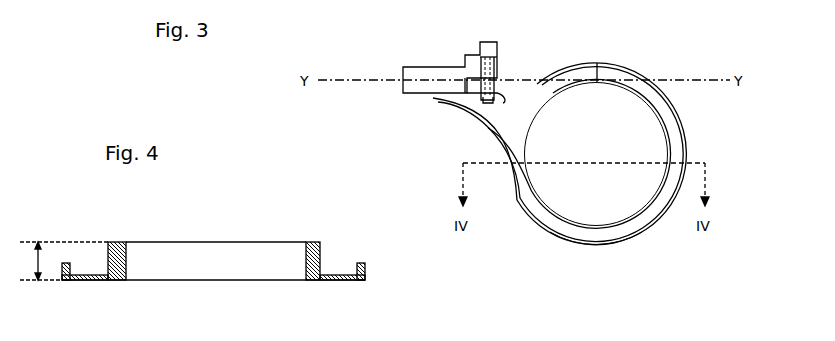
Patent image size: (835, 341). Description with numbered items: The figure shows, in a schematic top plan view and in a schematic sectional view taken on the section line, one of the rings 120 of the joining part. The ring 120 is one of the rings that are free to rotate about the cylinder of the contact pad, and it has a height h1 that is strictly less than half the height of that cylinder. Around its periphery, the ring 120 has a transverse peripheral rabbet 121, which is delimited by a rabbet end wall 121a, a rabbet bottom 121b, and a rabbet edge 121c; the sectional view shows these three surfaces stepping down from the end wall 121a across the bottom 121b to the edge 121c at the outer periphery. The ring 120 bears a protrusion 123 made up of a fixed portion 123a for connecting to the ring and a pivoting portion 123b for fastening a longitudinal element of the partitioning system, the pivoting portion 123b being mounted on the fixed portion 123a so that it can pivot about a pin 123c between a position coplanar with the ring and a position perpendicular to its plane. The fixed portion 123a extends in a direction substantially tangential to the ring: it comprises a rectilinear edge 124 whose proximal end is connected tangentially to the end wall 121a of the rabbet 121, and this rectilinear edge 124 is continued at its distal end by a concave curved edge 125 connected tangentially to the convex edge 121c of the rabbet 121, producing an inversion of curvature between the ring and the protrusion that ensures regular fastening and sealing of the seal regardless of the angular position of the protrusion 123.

In FIG. 3, the ring 120 is at (571, 250).
In FIG. 4, the ring 120 is at (262, 260).
In FIG. 3, the transverse peripheral rabbet 121 is at (545, 223).
In FIG. 4, the transverse peripheral rabbet 121 is at (91, 255).
In FIG. 3, the rabbet end wall 121a is at (596, 154).
In FIG. 4, the rabbet end wall 121a is at (322, 255).
In FIG. 3, the rabbet bottom 121b is at (652, 210).
In FIG. 4, the rabbet bottom 121b is at (345, 272).
In FIG. 3, the rabbet edge 121c is at (618, 246).
In FIG. 4, the rabbet edge 121c is at (368, 270).
In FIG. 3, the protrusion 123 is at (468, 70).
In FIG. 3, the fixed portion 123a is at (452, 110).
In FIG. 3, the pivoting portion 123b is at (425, 73).
In FIG. 3, the pin 123c is at (487, 44).
In FIG. 3, the rectilinear edge 124 is at (523, 80).
In FIG. 3, the concave curved edge 125 is at (492, 128).
In FIG. 4, the height of the ring h1 is at (36, 261).